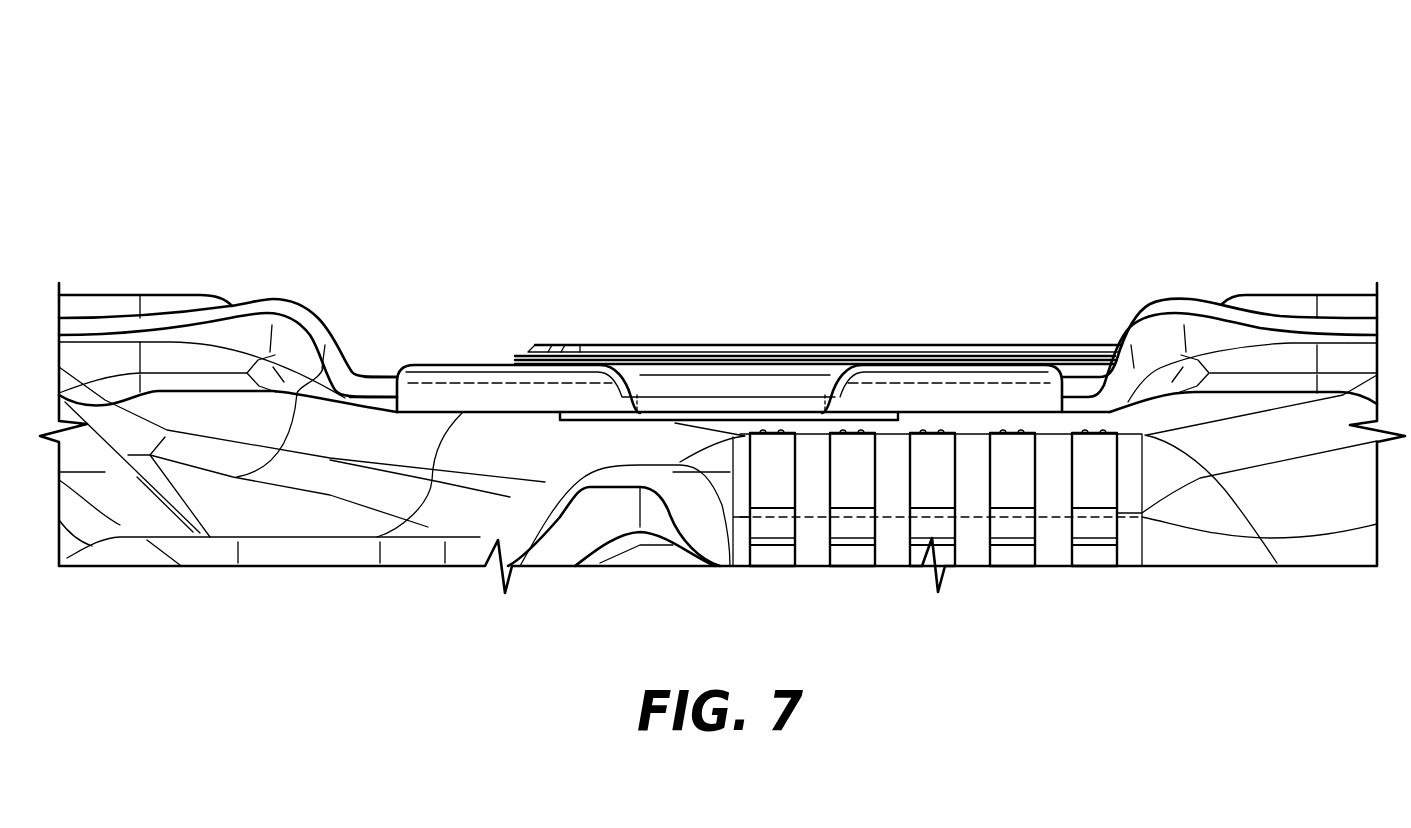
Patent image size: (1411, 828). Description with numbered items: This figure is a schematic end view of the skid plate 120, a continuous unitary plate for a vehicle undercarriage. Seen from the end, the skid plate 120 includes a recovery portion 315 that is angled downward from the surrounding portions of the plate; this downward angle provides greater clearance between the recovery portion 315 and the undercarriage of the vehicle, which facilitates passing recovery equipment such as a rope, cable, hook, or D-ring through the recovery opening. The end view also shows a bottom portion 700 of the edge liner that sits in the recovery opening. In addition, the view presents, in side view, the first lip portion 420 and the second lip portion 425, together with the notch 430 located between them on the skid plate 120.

The skid plate 120 is at (327, 148).
The recovery portion 315 is at (377, 360).
The second lip portion 425 is at (463, 365).
The notch 430 is at (719, 390).
The first lip portion 420 is at (982, 368).
The bottom portion of the edge liner 700 is at (610, 421).